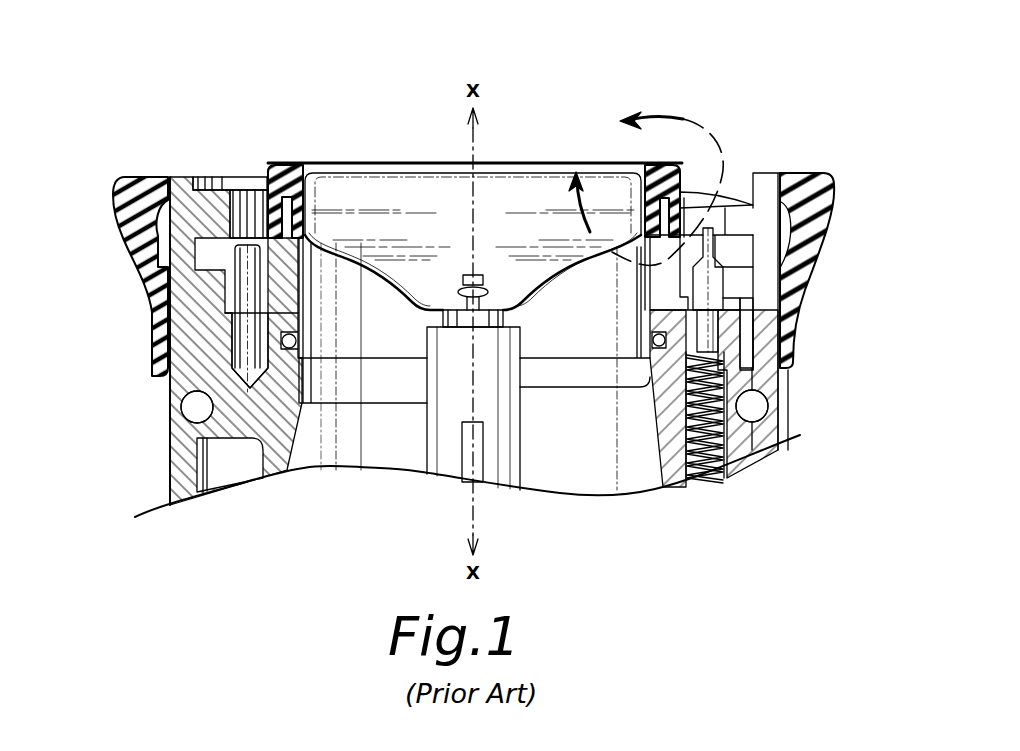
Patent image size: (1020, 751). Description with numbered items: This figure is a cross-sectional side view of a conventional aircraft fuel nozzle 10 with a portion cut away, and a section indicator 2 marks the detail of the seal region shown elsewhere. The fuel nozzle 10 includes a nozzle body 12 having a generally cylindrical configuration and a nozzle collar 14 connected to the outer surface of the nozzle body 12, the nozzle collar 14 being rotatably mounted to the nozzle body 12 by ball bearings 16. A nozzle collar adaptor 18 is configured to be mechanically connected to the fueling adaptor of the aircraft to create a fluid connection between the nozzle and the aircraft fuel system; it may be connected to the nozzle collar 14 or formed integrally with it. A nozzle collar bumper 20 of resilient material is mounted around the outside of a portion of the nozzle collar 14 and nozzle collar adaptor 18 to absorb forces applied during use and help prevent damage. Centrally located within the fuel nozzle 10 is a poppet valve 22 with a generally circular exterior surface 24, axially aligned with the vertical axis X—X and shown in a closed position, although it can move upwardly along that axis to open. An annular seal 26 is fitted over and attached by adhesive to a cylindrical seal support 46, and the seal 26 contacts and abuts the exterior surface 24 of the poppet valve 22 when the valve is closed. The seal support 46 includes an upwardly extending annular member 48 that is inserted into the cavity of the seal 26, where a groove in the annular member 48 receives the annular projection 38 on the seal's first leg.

The fuel nozzle 10 is at (695, 44).
The nozzle body 12 is at (220, 428).
The nozzle collar 14 is at (780, 427).
The ball bearings 16 is at (190, 403).
The nozzle collar adaptor 18 is at (182, 175).
The nozzle collar bumper 20 is at (127, 210).
The poppet valve 22 is at (511, 187).
The circular exterior surface 24 is at (330, 182).
The annular seal 26 is at (672, 165).
The annular projection 38 is at (273, 172).
The seal support 46 is at (660, 290).
The annular member 48 is at (707, 228).
The section line 2 is at (646, 188).